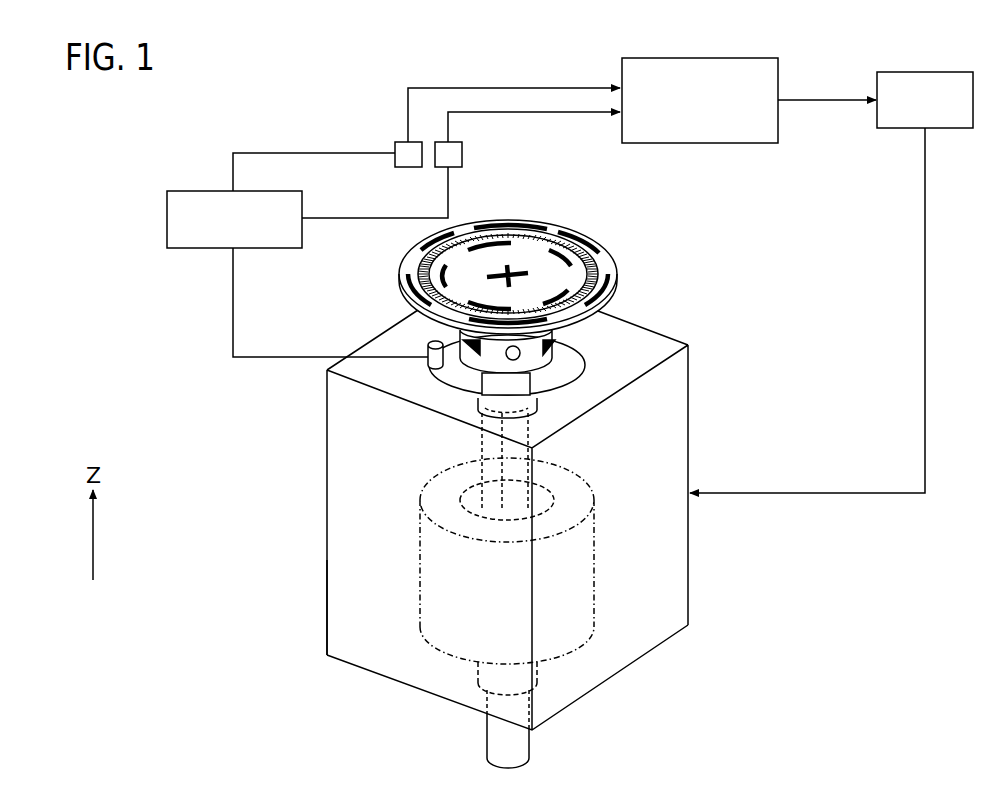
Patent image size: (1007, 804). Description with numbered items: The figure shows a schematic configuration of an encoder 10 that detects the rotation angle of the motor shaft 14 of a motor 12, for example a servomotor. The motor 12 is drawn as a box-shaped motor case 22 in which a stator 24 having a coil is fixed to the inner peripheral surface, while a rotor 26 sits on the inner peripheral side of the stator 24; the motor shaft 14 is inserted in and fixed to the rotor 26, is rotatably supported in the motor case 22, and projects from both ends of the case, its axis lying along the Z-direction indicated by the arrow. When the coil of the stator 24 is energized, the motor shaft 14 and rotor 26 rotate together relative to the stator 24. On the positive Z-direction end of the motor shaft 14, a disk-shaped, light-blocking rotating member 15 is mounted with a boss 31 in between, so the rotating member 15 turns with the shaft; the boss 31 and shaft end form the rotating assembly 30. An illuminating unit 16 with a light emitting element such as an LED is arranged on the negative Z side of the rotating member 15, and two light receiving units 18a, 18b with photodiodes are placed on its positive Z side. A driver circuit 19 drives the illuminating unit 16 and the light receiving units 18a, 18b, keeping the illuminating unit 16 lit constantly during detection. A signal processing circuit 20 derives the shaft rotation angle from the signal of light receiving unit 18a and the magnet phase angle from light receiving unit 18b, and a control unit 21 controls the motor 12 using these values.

The encoder 10 is at (136, 135).
The motor 12 is at (318, 532).
The motor shaft 14 is at (523, 384).
The rotating member 15 is at (604, 247).
The illuminating unit 16 is at (430, 345).
The light receiving unit 18a is at (395, 146).
The light receiving unit 18b is at (463, 160).
The driver circuit 19 is at (167, 218).
The signal processing circuit 20 is at (710, 58).
The control unit 21 is at (925, 72).
The motor case 22 is at (327, 605).
The stator 24 is at (435, 560).
The rotor 26 is at (447, 490).
The rotating body 30 is at (606, 543).
The boss 31 is at (585, 352).